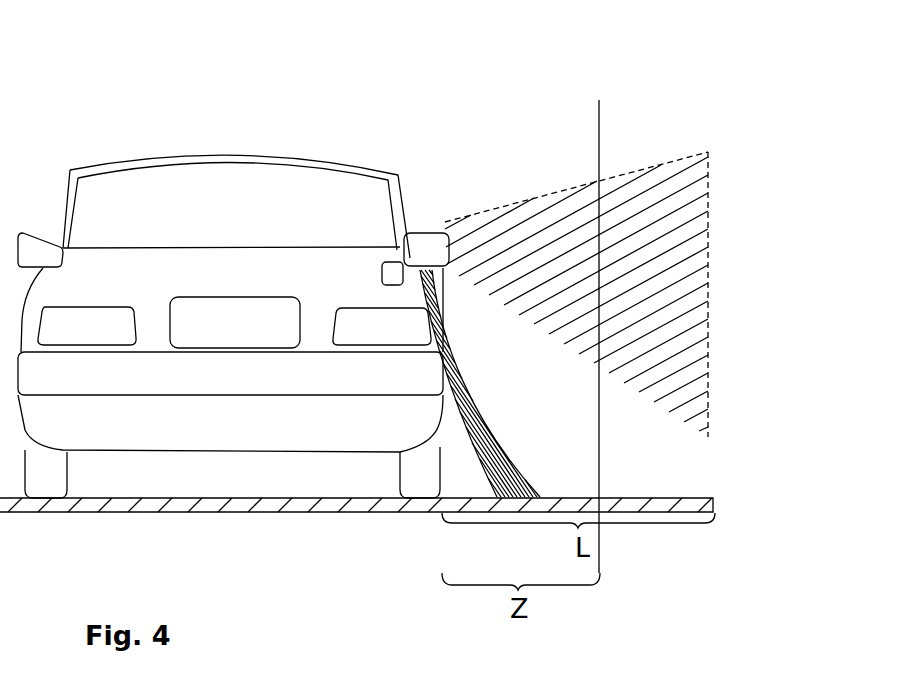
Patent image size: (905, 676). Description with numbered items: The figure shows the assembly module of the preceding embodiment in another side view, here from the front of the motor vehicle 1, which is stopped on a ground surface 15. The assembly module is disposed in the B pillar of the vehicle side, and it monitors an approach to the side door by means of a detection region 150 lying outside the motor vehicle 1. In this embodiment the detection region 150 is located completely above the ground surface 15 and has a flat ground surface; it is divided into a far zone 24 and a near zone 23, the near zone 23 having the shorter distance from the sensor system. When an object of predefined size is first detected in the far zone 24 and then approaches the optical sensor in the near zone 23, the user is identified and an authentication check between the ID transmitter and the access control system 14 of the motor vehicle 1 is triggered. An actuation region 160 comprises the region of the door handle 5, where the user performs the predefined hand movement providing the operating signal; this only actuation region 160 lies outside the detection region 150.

The motor vehicle 1 is at (185, 115).
The access control system 14 is at (392, 268).
The door handle 5 is at (440, 280).
The near zone 23 is at (523, 232).
The far zone 24 is at (653, 182).
The detection region 150 is at (677, 270).
The actuation region 160 is at (526, 490).
The ground surface 15 is at (713, 506).